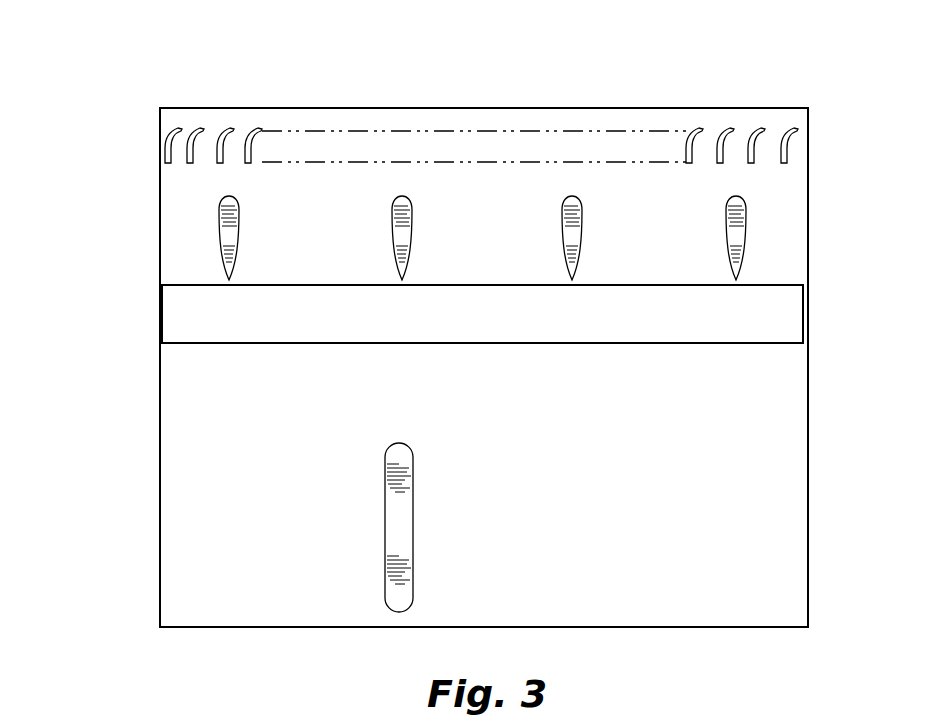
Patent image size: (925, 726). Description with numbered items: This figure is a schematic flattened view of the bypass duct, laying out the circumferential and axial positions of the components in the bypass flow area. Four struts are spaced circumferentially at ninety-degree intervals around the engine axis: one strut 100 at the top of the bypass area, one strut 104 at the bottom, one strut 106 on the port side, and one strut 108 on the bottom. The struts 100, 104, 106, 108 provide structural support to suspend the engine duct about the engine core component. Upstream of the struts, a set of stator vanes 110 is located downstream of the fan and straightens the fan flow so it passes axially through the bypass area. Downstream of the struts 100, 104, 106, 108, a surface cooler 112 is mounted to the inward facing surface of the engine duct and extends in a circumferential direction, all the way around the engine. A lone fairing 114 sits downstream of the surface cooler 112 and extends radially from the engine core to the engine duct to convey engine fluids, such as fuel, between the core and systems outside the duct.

The strut 100 is at (112, 142).
The strut 104 is at (737, 250).
The strut 106 is at (222, 233).
The strut 108 is at (573, 247).
The stator vanes 110 is at (197, 128).
The surface cooler 112 is at (200, 346).
The fairing 114 is at (405, 530).